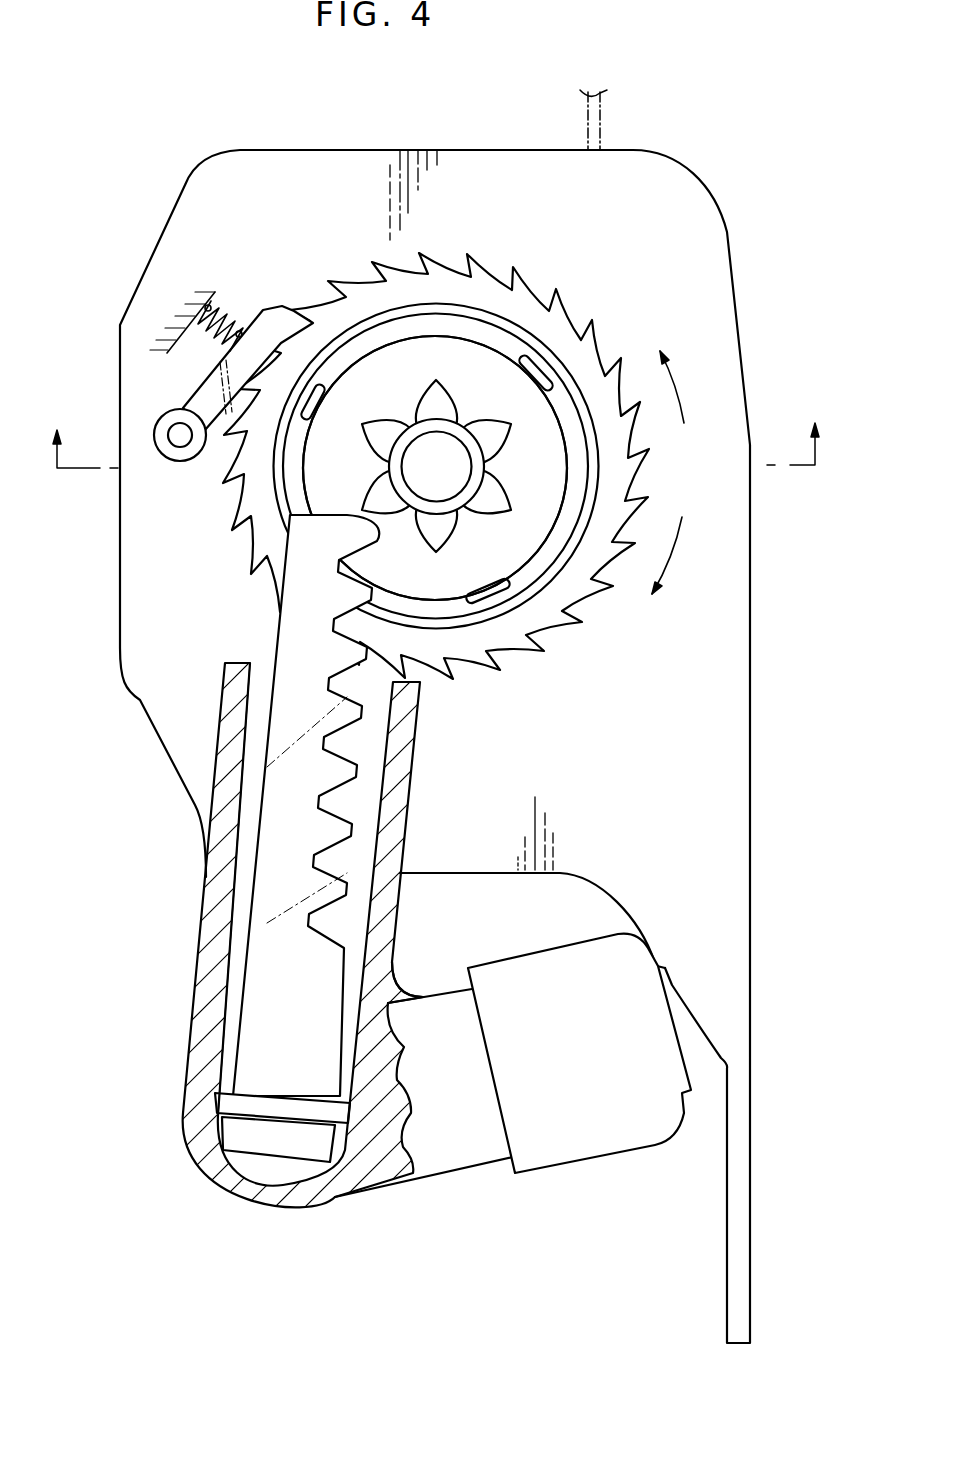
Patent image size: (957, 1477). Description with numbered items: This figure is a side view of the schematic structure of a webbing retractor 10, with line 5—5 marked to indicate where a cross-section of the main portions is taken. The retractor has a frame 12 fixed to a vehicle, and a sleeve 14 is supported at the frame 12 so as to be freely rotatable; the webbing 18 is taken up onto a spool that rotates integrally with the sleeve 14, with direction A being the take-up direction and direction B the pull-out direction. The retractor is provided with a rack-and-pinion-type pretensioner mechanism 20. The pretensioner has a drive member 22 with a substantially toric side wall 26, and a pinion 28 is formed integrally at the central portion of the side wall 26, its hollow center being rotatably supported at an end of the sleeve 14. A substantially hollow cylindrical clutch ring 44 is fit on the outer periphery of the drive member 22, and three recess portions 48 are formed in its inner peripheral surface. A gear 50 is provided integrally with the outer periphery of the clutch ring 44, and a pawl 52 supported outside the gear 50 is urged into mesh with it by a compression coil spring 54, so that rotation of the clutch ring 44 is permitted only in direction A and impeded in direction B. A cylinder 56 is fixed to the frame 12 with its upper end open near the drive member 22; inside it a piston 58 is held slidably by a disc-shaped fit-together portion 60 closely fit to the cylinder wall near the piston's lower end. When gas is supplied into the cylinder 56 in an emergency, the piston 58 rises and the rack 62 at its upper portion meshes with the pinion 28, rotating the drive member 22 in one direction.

The webbing retractor 10 is at (188, 85).
The frame 12 is at (476, 150).
The sleeve 14 is at (445, 465).
The webbing 18 is at (600, 133).
The pretensioner mechanism 20 is at (423, 480).
The drive member 22 is at (397, 360).
The side wall 26 is at (356, 360).
The pinion 28 is at (452, 398).
The clutch ring 44 is at (487, 305).
The recess portions 48 is at (540, 383).
The gear 50 is at (563, 307).
The pawl 52 is at (268, 310).
The compression coil spring 54 is at (228, 300).
The cylinder 56 is at (413, 768).
The piston 58 is at (276, 637).
The fit-together portion 60 is at (230, 1100).
The rack 62 is at (386, 790).
The line 5— 5 is at (432, 428).